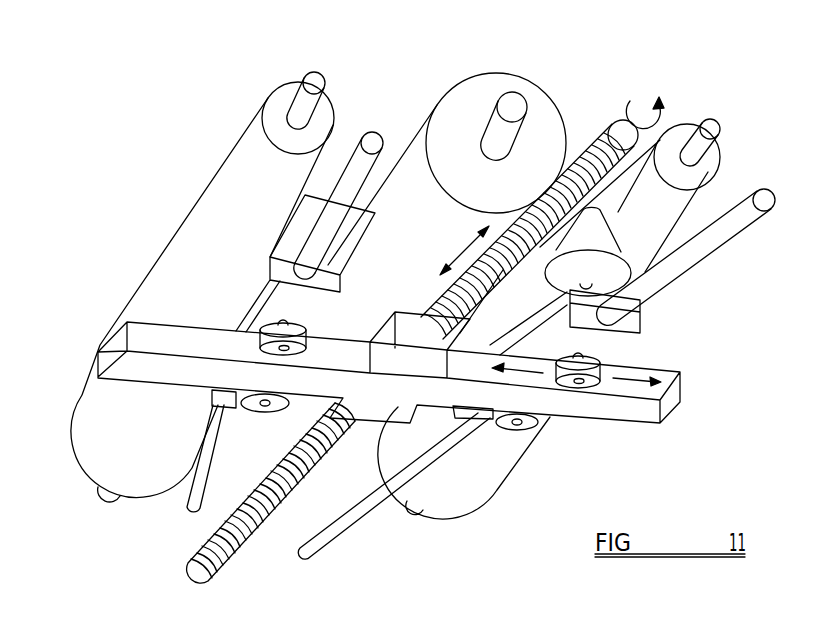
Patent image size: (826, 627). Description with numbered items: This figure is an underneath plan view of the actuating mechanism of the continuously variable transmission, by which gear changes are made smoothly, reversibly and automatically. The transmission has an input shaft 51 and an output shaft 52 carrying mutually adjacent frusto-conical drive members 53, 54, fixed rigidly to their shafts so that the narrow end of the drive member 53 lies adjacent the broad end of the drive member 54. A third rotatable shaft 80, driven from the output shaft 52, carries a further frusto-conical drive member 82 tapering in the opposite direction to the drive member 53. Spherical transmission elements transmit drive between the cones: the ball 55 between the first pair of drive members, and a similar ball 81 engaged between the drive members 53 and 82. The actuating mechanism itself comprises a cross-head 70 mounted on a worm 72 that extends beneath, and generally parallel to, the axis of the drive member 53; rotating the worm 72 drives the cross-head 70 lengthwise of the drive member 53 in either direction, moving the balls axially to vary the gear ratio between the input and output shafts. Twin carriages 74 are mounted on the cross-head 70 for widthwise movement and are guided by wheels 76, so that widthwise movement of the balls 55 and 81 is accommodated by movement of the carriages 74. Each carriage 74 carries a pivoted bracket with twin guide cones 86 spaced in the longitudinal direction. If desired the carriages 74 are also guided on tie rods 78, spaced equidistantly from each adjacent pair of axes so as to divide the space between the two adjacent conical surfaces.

The cross-head 70 is at (673, 405).
The worm 72 is at (618, 122).
The carriage 74 is at (272, 296).
The wheel 76 is at (215, 372).
The tie rod 78 is at (737, 230).
The third rotatable shaft 80 is at (318, 82).
The transmission element 81 is at (343, 248).
The frusto-conical drive member 82 is at (233, 203).
The guide cone 86 is at (333, 215).
The input shaft 51 is at (458, 88).
The output shaft 52 is at (703, 117).
The frusto-conical drive member 53 is at (490, 122).
The frusto-conical drive member 54 is at (683, 213).
The transmission element 55 is at (622, 302).